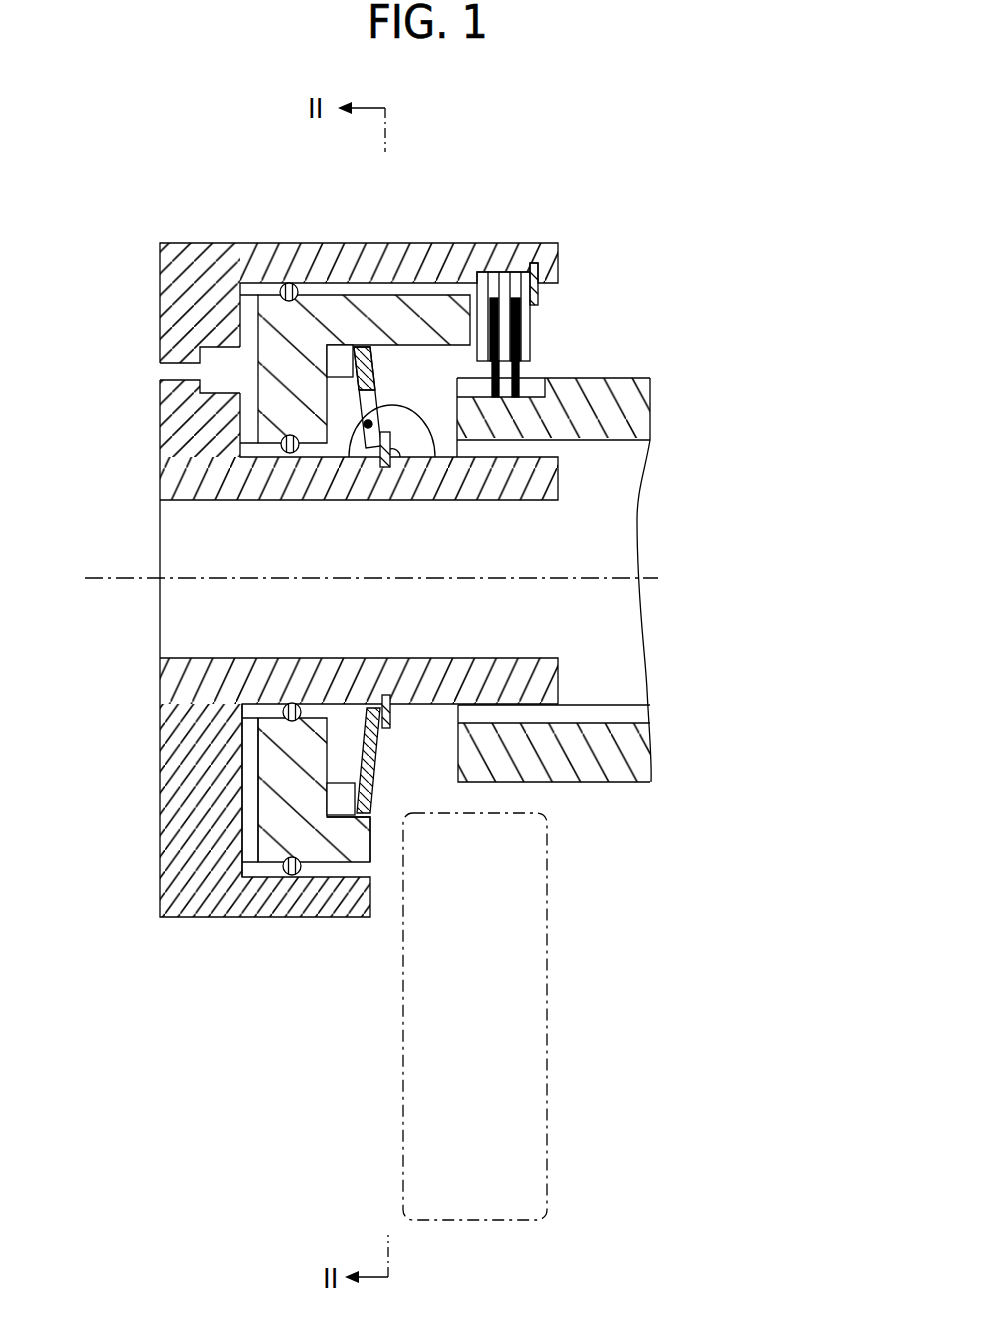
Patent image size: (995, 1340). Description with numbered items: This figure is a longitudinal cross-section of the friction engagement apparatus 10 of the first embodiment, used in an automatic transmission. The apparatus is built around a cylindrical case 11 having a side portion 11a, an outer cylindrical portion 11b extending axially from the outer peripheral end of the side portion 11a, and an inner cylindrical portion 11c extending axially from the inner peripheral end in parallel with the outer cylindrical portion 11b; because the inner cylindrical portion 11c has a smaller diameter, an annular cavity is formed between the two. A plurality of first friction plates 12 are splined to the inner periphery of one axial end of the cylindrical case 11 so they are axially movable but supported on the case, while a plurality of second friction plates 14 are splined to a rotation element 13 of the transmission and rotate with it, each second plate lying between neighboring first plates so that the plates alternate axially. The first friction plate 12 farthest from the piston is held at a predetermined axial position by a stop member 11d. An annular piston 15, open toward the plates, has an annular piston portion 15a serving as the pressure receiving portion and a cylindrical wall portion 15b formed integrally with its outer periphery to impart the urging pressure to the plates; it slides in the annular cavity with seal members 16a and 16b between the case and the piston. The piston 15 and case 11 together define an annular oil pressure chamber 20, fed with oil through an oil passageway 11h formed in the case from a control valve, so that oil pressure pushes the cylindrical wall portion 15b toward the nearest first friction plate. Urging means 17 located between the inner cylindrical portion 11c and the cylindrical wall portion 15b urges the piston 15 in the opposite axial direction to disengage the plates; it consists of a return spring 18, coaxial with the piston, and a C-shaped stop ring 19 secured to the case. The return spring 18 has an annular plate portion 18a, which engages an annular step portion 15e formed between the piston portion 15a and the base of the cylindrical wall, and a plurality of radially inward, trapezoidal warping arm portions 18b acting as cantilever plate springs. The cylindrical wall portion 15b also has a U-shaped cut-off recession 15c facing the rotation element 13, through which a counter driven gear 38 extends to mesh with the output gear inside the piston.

The friction engagement apparatus 10 is at (535, 188).
The cylindrical case 11 is at (158, 688).
The side portion 11a is at (160, 279).
The outer cylindrical portion 11b is at (388, 243).
The inner cylindrical portion 11c is at (528, 456).
The stop member 11d is at (545, 288).
The oil passageway 11h is at (175, 380).
The first friction plates 12 is at (532, 327).
The rotation element 13 is at (620, 378).
The second friction plates 14 is at (514, 378).
The annular piston 15 is at (255, 305).
The annular piston portion 15a is at (250, 737).
The cylindrical wall portion 15b is at (442, 307).
The cut-off recession 15c is at (373, 838).
The annular step portion 15e is at (342, 804).
The seal member 16a is at (289, 283).
The seal member 16b is at (288, 453).
The urging means 17 is at (404, 370).
The return spring 18 is at (431, 442).
The annular plate portion 18a is at (372, 345).
The warping arm portions 18b is at (358, 433).
The stop ring 19 is at (396, 446).
The oil pressure chamber 20 is at (252, 828).
The counter driven gear 38 is at (546, 990).